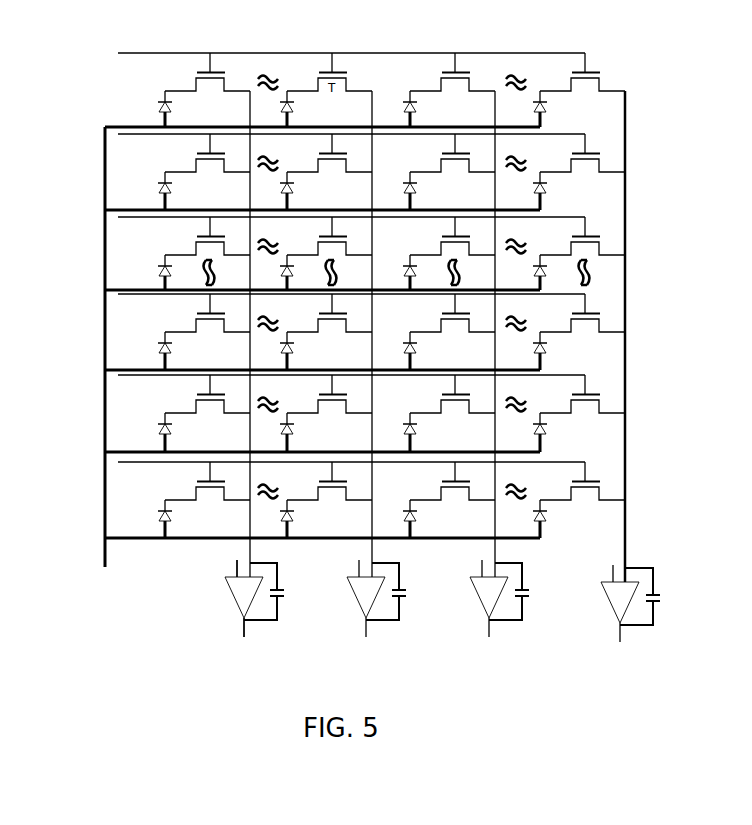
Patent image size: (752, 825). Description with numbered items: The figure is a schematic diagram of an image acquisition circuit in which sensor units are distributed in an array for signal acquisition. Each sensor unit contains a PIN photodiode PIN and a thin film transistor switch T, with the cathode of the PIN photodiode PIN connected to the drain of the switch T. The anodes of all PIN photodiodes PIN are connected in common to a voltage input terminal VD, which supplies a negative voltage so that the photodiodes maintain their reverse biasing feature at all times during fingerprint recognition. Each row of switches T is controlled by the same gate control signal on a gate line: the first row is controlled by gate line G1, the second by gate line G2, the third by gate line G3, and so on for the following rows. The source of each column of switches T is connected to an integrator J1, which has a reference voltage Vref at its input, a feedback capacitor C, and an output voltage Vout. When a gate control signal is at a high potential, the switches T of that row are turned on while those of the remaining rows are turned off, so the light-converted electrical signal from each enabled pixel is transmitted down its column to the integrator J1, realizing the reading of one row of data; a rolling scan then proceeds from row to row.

The gate line 1 signal G1 is at (331, 54).
The gate control signal line G2 is at (328, 127).
The gate control signal line G3 is at (328, 210).
The thin film transistor switch T is at (207, 74).
The PIN photodiode PIN is at (176, 109).
The voltage input terminal VD is at (106, 356).
The integrator J1 is at (224, 598).
The integrating capacitor C is at (271, 591).
The reference voltage input Vref is at (222, 569).
The output voltage Vout is at (258, 628).